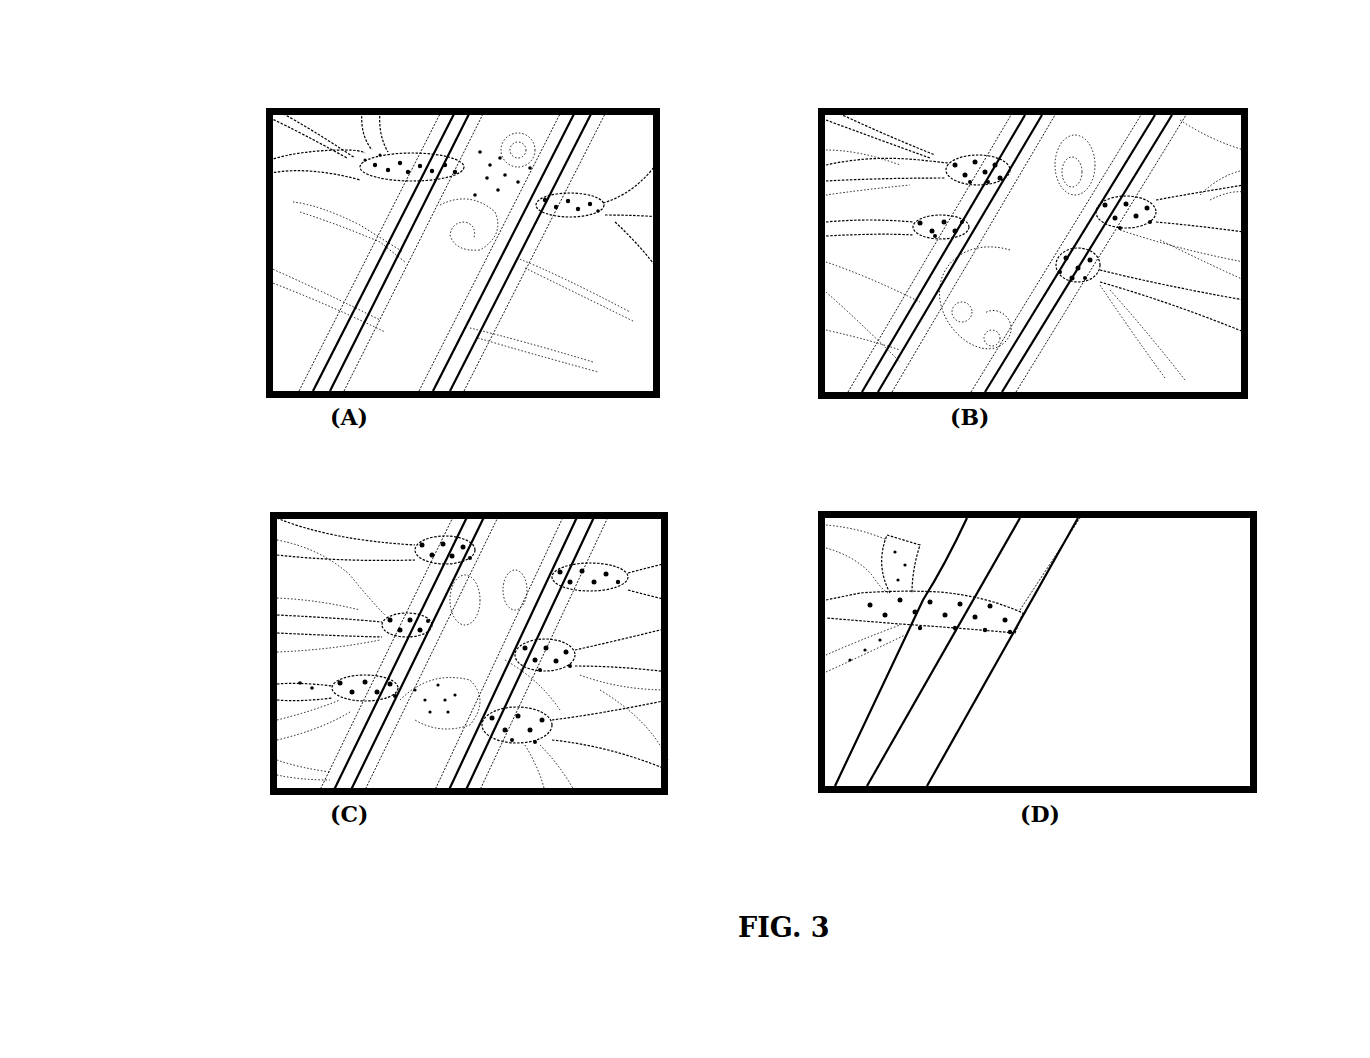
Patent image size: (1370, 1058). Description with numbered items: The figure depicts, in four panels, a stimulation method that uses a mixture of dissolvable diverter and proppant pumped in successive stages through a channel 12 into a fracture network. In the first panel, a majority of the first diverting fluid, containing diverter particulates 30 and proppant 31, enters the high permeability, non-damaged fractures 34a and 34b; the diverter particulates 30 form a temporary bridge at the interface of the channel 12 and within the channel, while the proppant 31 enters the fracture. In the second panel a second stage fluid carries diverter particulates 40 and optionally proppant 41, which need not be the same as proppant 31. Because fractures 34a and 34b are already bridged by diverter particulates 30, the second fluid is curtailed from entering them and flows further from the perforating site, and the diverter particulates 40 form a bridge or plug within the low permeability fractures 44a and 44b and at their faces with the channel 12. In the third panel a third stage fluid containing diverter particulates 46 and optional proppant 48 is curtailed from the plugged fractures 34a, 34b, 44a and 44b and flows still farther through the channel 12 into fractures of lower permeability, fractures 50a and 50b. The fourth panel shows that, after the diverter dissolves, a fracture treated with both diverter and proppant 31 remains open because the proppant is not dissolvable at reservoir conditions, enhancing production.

The channel 12 is at (540, 130).
The diverter particulates 30 is at (437, 158).
The proppant 31 is at (490, 128).
The fracture 34a is at (357, 165).
The fracture 34b is at (615, 205).
The diverter particulates 40 is at (1065, 262).
The proppant 41 is at (1080, 225).
The fracture 44a is at (935, 230).
The fracture 44b is at (1130, 270).
The diverter particulates 46 is at (1245, 195).
The proppant 48 is at (620, 572).
The fracture 50a is at (310, 690).
The fracture 50b is at (560, 770).